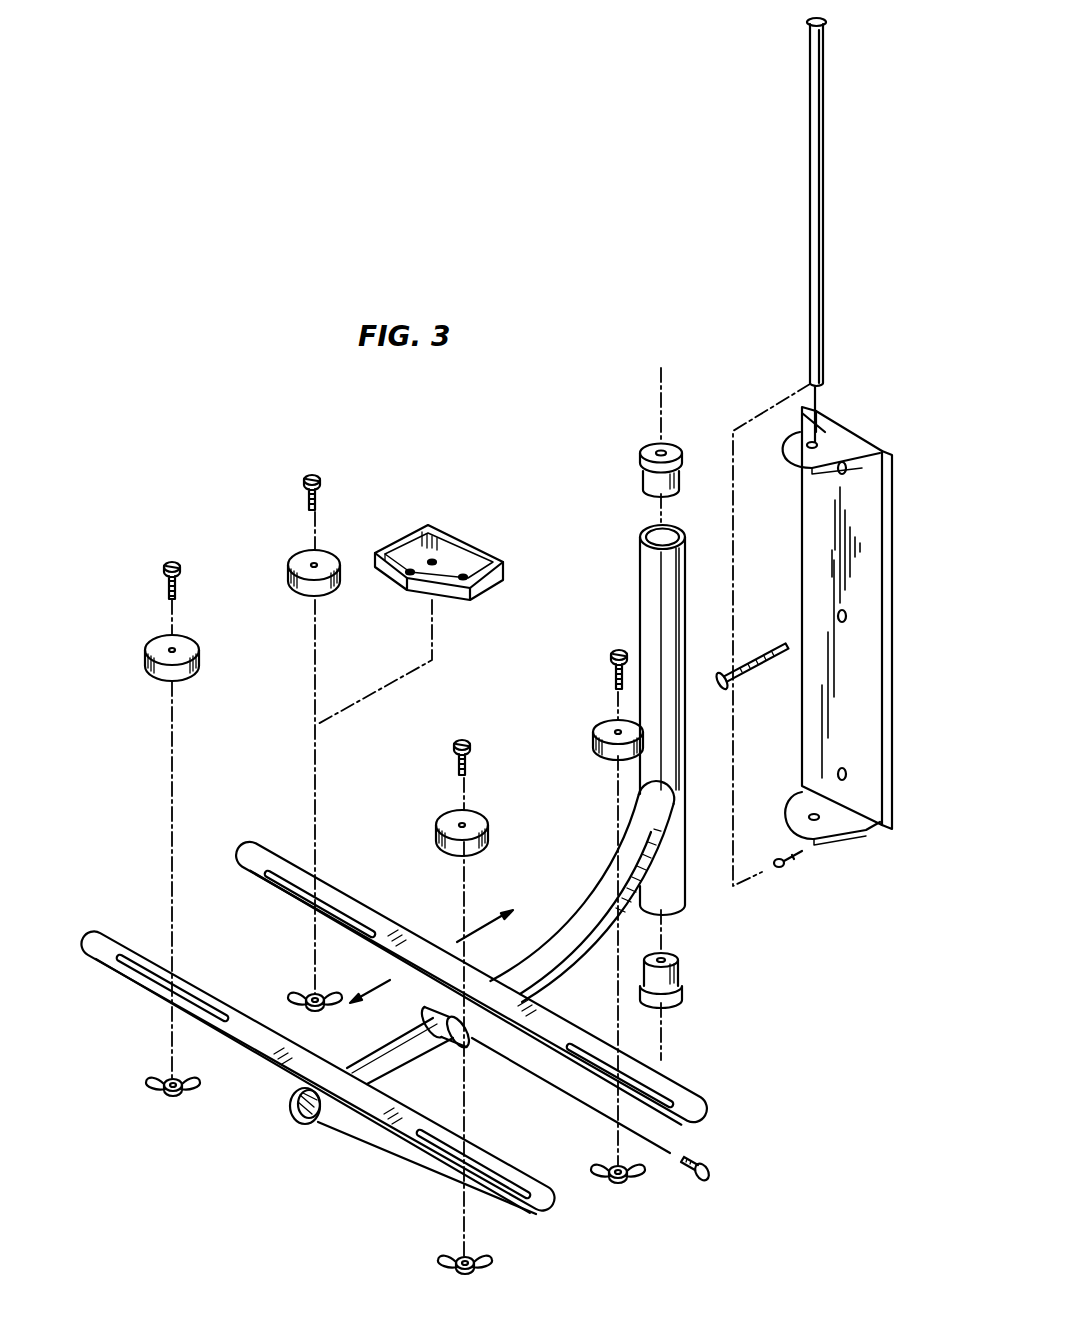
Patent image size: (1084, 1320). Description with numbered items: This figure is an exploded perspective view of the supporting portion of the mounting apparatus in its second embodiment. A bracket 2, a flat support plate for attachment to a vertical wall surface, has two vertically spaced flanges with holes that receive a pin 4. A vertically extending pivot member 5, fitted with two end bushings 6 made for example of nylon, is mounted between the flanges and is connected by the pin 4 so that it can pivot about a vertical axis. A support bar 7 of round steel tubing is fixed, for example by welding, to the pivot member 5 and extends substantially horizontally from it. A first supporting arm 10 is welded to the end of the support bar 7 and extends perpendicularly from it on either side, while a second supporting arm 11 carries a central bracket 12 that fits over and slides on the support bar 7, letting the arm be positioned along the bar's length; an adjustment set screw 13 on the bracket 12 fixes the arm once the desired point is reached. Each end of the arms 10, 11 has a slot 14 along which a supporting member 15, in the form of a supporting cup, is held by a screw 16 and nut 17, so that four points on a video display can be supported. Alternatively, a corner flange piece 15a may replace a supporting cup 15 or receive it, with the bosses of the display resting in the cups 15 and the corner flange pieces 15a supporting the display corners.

The bracket 2 is at (885, 624).
The pin 4 is at (812, 211).
The vertically extending pivot member 5 is at (642, 547).
The end bushings 6 is at (675, 440).
The support bar 7 is at (413, 1050).
The first supporting arm 10 is at (345, 1120).
The second supporting arm 11 is at (703, 1118).
The central bracket 12 is at (465, 1040).
The adjustment set screw 13 is at (710, 1160).
The slots 14 is at (338, 915).
The supporting member 15 is at (196, 640).
The corner flange piece 15a is at (470, 547).
The screw 16 is at (178, 565).
The nut 17 is at (318, 1007).